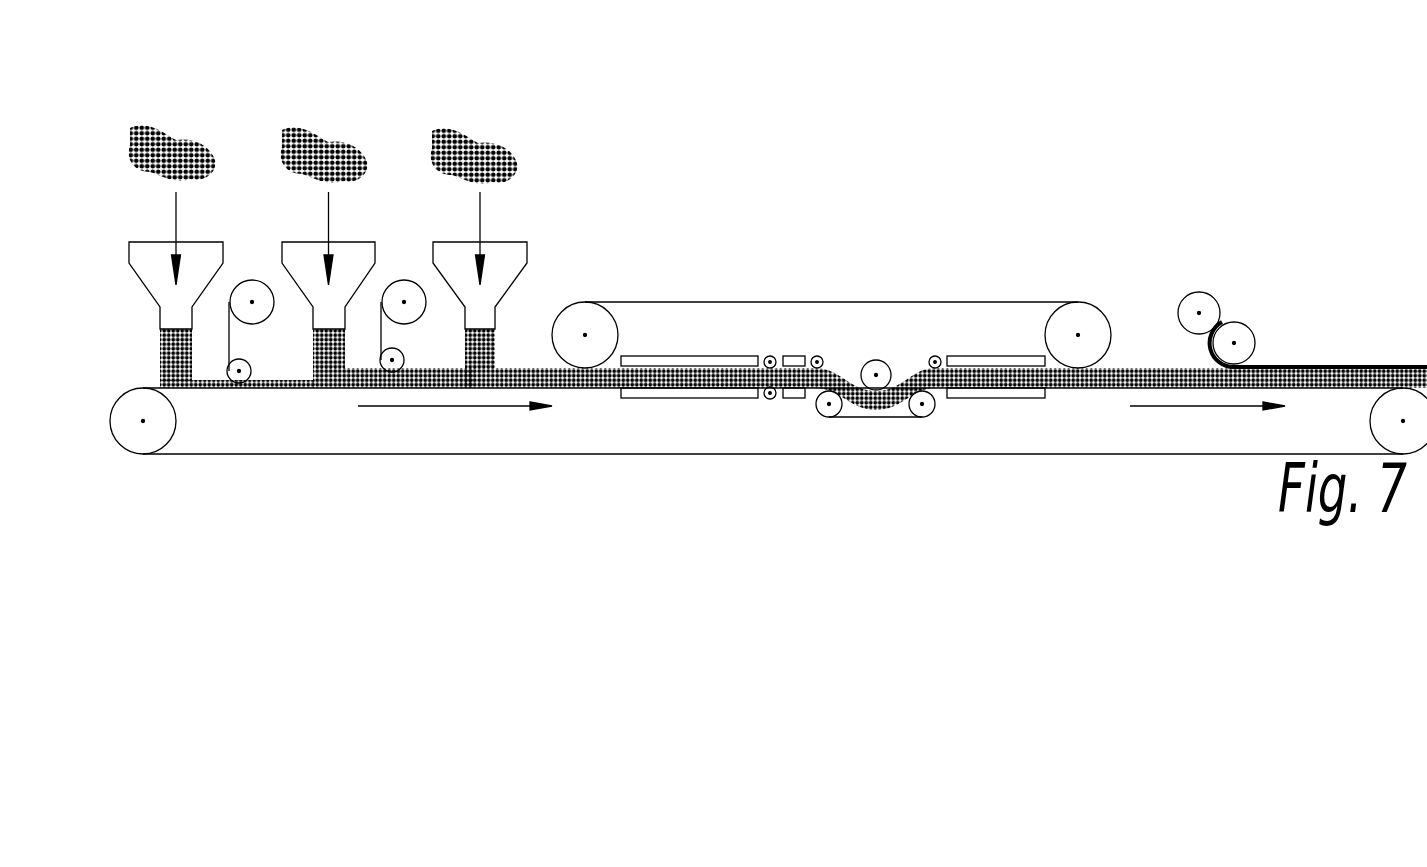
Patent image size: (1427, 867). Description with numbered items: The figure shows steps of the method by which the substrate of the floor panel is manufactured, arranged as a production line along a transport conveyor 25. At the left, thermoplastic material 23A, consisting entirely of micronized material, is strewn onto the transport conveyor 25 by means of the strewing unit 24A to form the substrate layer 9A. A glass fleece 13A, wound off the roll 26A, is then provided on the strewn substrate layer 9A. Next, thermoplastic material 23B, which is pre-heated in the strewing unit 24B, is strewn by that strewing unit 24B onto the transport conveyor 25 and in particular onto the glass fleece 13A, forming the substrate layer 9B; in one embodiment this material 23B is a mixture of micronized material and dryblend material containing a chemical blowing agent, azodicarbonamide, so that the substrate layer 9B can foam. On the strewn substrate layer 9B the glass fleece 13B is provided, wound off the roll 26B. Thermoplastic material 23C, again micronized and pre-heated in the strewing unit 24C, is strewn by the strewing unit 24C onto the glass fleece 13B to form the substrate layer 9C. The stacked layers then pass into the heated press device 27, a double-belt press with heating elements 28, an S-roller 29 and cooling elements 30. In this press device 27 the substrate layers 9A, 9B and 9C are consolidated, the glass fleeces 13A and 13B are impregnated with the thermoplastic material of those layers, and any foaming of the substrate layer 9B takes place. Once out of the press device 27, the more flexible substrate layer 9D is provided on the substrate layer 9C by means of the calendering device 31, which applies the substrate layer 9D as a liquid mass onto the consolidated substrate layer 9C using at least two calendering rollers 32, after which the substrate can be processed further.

The substrate layer 9A is at (208, 384).
The substrate layer 9B is at (345, 384).
The substrate layer 9C is at (546, 372).
The substrate layer 9D is at (1316, 362).
The glass fleece 13A is at (229, 339).
The glass fleece 13B is at (382, 337).
The thermoplastic material 23A is at (163, 137).
The thermoplastic material 23B is at (330, 138).
The thermoplastic material 23C is at (480, 140).
The strewing unit 24A is at (205, 249).
The strewing unit 24B is at (358, 249).
The strewing unit 24C is at (514, 250).
The transport conveyor 25 is at (155, 388).
The roll 26A is at (263, 306).
The roll 26B is at (415, 306).
The press device 27 is at (920, 255).
The heating elements 28 is at (806, 388).
The S-roller 29 is at (845, 330).
The cooling elements 30 is at (1013, 392).
The calendering device 31 is at (1199, 287).
The calendering rollers 32 is at (1243, 333).